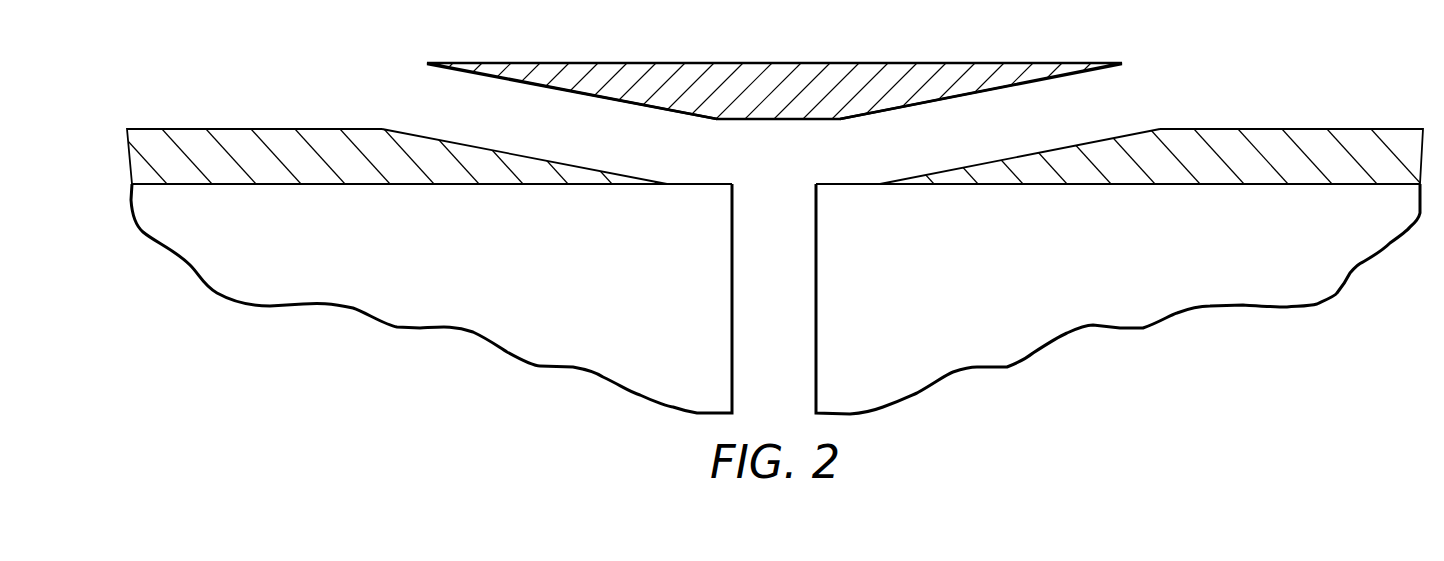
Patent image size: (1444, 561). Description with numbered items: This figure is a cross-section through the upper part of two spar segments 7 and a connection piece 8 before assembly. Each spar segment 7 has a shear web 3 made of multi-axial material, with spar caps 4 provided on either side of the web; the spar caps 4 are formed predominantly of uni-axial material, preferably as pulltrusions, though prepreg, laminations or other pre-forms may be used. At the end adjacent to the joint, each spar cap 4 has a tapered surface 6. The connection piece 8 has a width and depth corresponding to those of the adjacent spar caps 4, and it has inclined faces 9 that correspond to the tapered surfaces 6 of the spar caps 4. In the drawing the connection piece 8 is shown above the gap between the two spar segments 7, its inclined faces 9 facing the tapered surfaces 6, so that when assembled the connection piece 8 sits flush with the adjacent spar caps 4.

The shear web 3 is at (1217, 207).
The spar cap 4 is at (242, 138).
The tapered surface 6 is at (446, 140).
The spar segment 7 is at (645, 302).
The connection piece 8 is at (775, 73).
The inclined face 9 is at (593, 97).